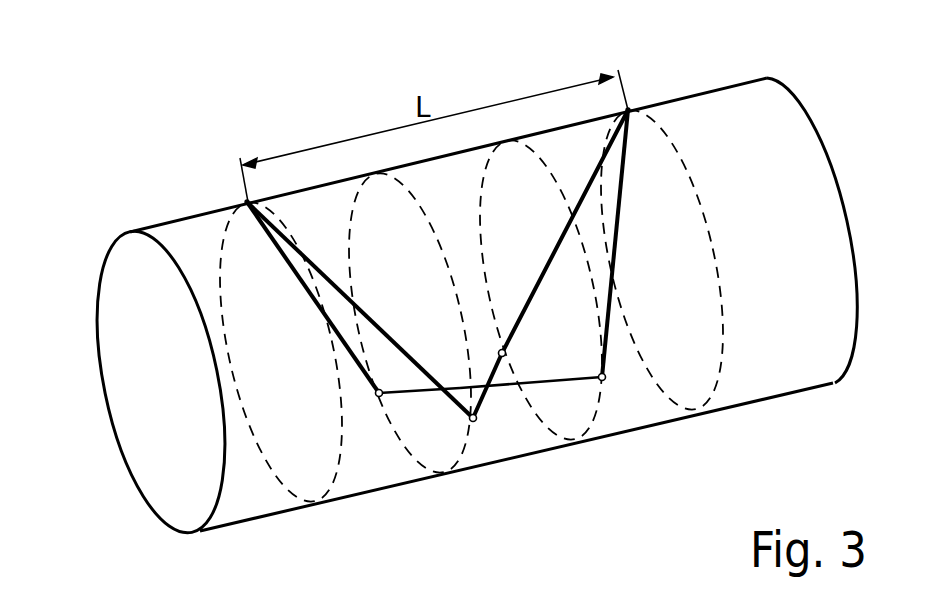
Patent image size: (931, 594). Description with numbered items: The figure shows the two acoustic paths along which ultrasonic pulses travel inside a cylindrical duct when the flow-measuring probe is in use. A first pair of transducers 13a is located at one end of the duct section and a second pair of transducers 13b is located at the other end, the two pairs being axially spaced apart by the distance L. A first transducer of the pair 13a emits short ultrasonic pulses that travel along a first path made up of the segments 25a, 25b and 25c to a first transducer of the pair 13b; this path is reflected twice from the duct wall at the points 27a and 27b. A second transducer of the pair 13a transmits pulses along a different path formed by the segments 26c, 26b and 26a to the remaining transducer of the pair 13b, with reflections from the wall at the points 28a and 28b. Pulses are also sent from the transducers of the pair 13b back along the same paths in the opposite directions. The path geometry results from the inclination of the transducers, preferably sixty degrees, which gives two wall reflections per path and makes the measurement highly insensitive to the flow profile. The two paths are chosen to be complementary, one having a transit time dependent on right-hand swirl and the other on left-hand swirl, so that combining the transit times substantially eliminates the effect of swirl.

The first pair of transducers 13a is at (247, 202).
The second pair of transducers 13b is at (628, 110).
The first segment of first ultrasonic path 25a is at (288, 261).
The second segment of first ultrasonic path 25b is at (424, 392).
The third segment of first ultrasonic path 25c is at (612, 264).
The first segment of second ultrasonic path 26a is at (567, 228).
The second segment of second ultrasonic path 26b is at (548, 383).
The third segment of second ultrasonic path 26c is at (330, 280).
The first reflection point of first path 27a is at (377, 397).
The second reflection point of first path 27b is at (606, 381).
The first reflection point of second path 28a is at (506, 351).
The second reflection point of second path 28b is at (477, 422).